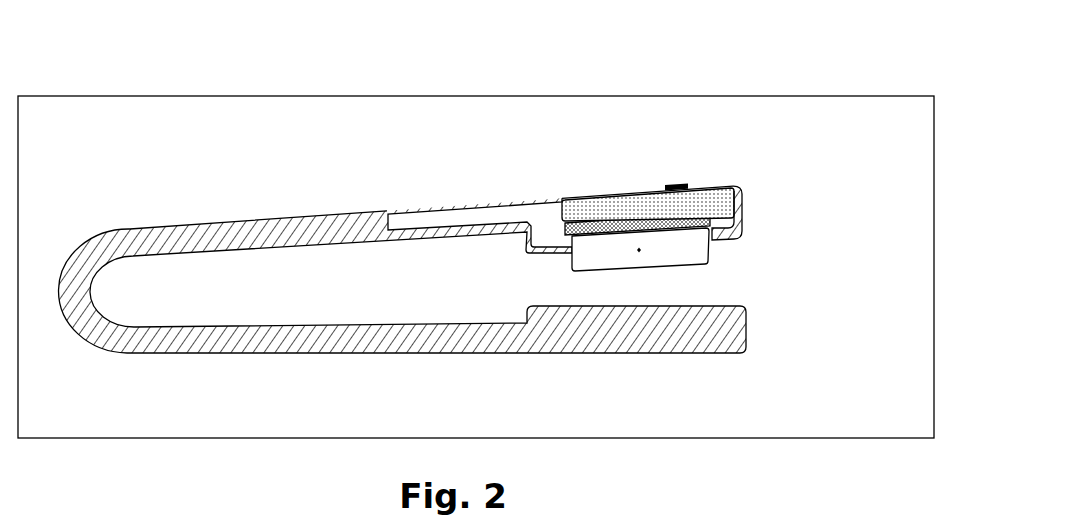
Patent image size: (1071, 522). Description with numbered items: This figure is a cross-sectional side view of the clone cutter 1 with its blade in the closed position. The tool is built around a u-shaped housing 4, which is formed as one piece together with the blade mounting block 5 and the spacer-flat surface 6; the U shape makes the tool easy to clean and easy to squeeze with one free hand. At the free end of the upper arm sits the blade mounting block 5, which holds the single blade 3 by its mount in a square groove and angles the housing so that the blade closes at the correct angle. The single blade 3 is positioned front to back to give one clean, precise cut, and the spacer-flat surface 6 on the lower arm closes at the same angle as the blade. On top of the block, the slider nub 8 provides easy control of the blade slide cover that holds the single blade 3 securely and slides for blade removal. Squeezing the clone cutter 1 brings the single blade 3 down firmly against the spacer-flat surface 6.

The clone cutter 1 is at (416, 92).
The single blade 3 is at (716, 252).
The u-shaped housing 4 is at (139, 221).
The blade mounting block 5 is at (749, 222).
The spacer-flat surface 6 is at (749, 318).
The slider nub 8 is at (704, 180).